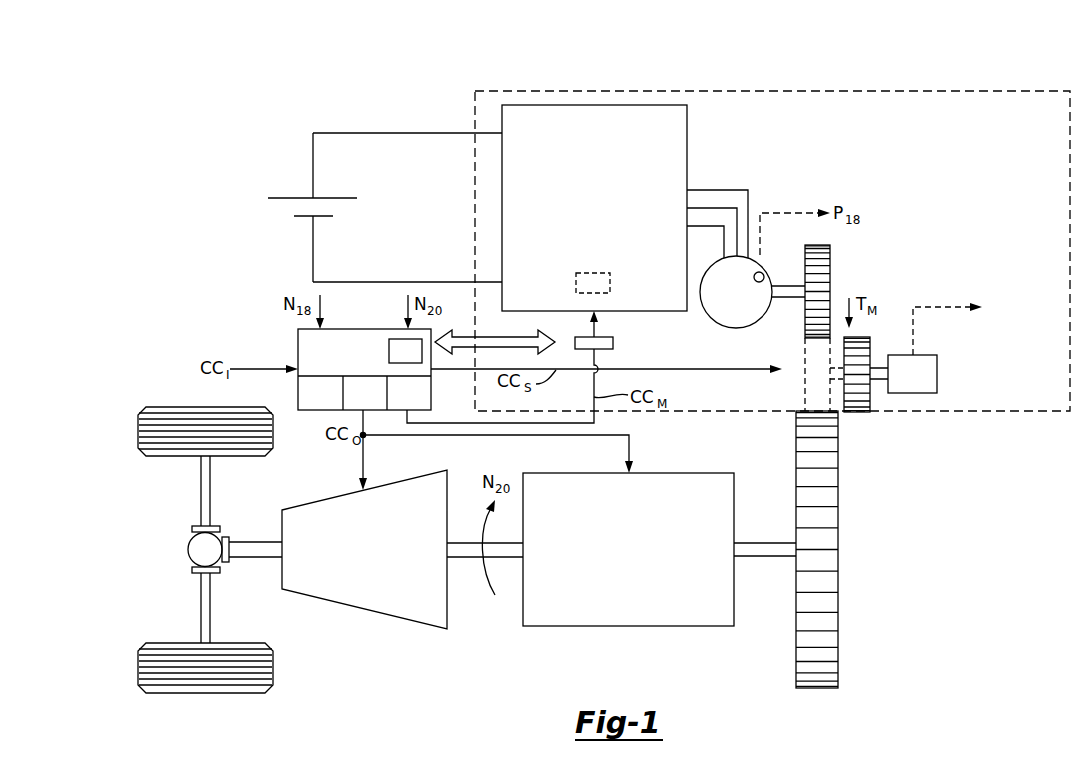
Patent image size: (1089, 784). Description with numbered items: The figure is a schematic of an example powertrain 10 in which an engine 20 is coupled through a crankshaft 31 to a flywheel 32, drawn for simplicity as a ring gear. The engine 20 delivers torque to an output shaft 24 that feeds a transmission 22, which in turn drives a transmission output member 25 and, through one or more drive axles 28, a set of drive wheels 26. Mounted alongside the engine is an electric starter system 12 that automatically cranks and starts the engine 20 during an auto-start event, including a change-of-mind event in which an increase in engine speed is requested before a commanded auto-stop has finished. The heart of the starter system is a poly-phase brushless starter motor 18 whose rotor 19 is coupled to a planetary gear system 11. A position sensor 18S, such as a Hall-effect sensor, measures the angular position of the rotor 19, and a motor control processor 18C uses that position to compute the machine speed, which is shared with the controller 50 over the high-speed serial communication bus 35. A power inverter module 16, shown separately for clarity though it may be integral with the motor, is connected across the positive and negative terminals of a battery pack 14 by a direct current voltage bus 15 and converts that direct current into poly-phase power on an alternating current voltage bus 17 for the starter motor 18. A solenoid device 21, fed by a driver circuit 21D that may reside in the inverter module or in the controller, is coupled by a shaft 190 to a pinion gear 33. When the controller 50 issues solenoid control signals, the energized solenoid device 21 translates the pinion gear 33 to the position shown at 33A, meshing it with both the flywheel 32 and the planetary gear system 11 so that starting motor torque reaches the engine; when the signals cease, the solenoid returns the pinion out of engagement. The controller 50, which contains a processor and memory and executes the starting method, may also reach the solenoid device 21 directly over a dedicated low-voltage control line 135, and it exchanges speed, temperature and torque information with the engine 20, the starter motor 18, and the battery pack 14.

The powertrain 10 is at (1004, 50).
The electric starter system 12 is at (797, 91).
The battery pack 14 is at (242, 208).
The DC voltage bus 15 is at (406, 133).
The power inverter module 16 is at (593, 105).
The AC voltage bus 17 is at (718, 190).
The starter motor 18 is at (710, 318).
The position sensor 18S is at (764, 274).
The motor control processor 18C is at (613, 343).
The rotor 19 is at (790, 300).
The planetary gear system 11 is at (830, 290).
The pinion gear engaged position 33A is at (802, 360).
The pinion gear 33 is at (855, 415).
The shaft 190 is at (875, 415).
The solenoid device 21 is at (937, 375).
The control line 135 is at (913, 332).
The driver circuit 21D is at (610, 284).
The flywheel 32 is at (838, 544).
The crankshaft 31 is at (762, 557).
The engine 20 is at (630, 627).
The output shaft 24 is at (462, 558).
The transmission 22 is at (372, 613).
The transmission output member 25 is at (256, 560).
The drive axles 28 is at (201, 492).
The drive wheels 26 is at (138, 430).
The controller 50 is at (298, 343).
The CAN bus 35 is at (466, 354).